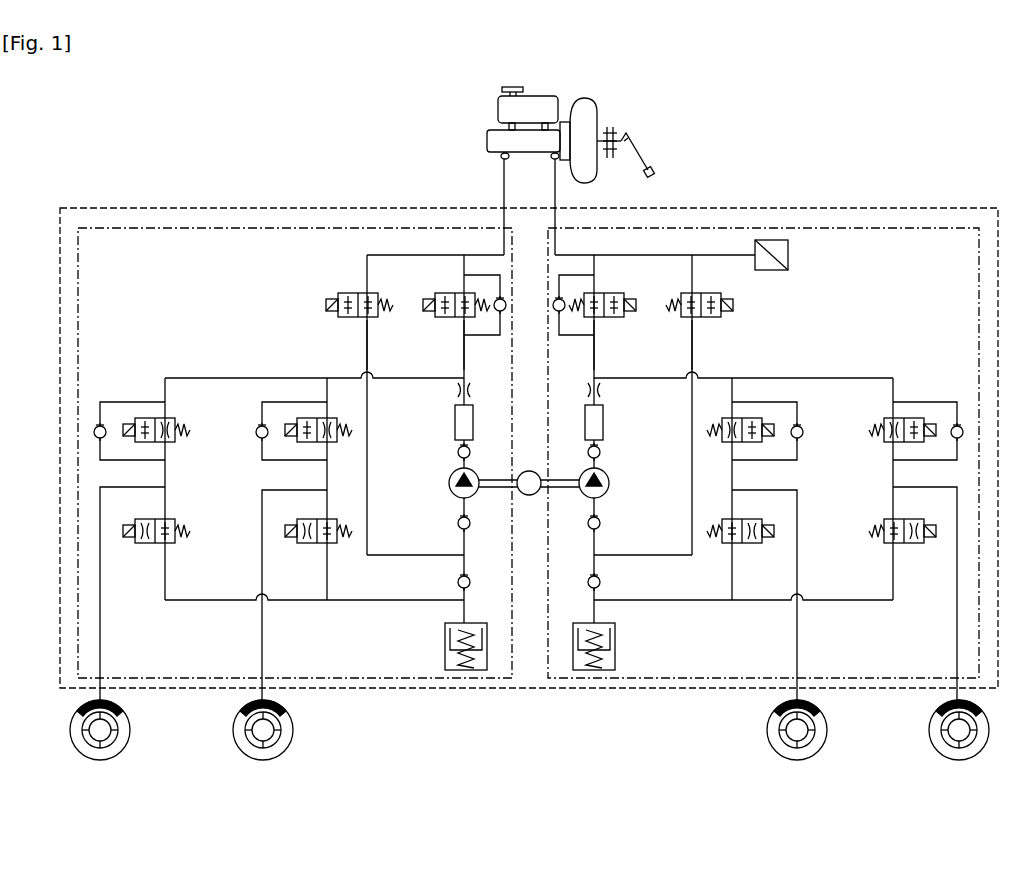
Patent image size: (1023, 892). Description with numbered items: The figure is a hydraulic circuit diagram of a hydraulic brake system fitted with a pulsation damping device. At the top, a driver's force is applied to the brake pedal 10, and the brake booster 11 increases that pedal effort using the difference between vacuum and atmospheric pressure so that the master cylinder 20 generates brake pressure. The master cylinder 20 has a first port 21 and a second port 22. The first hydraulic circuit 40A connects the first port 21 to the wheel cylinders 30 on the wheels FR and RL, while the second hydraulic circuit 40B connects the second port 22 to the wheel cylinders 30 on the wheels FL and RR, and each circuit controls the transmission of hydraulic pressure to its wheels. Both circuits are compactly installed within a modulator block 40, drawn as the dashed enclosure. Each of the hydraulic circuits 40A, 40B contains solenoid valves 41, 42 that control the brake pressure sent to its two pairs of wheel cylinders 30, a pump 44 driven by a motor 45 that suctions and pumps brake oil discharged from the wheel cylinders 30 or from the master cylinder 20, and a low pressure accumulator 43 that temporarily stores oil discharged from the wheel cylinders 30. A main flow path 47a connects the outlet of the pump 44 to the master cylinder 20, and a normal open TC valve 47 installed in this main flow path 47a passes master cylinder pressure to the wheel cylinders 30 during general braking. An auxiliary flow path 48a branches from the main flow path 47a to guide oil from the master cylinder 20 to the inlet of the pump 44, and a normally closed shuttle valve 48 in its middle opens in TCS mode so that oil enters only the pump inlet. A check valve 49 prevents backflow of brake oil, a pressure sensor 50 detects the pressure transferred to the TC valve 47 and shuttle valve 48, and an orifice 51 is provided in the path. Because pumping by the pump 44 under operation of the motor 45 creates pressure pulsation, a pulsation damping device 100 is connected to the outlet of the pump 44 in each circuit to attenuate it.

The brake pedal 10 is at (630, 134).
The brake booster 11 is at (612, 125).
The master cylinder 20 is at (487, 137).
The first port 21 is at (553, 160).
The second port 22 is at (503, 160).
The wheel cylinder 30 is at (72, 722).
The modulator block 40 is at (355, 208).
The first hydraulic circuit 40A is at (826, 228).
The second hydraulic circuit 40B is at (292, 228).
The solenoid valve 41 is at (150, 442).
The solenoid valve 42 is at (150, 543).
The low pressure accumulator 43 is at (445, 638).
The pump 44 is at (449, 483).
The motor 45 is at (529, 495).
The TC valve 47 is at (445, 292).
The main flow path 47a is at (464, 352).
The shuttle valve 48 is at (348, 292).
The auxiliary flow path 48a is at (367, 345).
The check valve 49 is at (470, 525).
The pressure sensor 50 is at (788, 256).
The orifice 51 is at (457, 390).
The pulsation damping device 100 is at (576, 419).